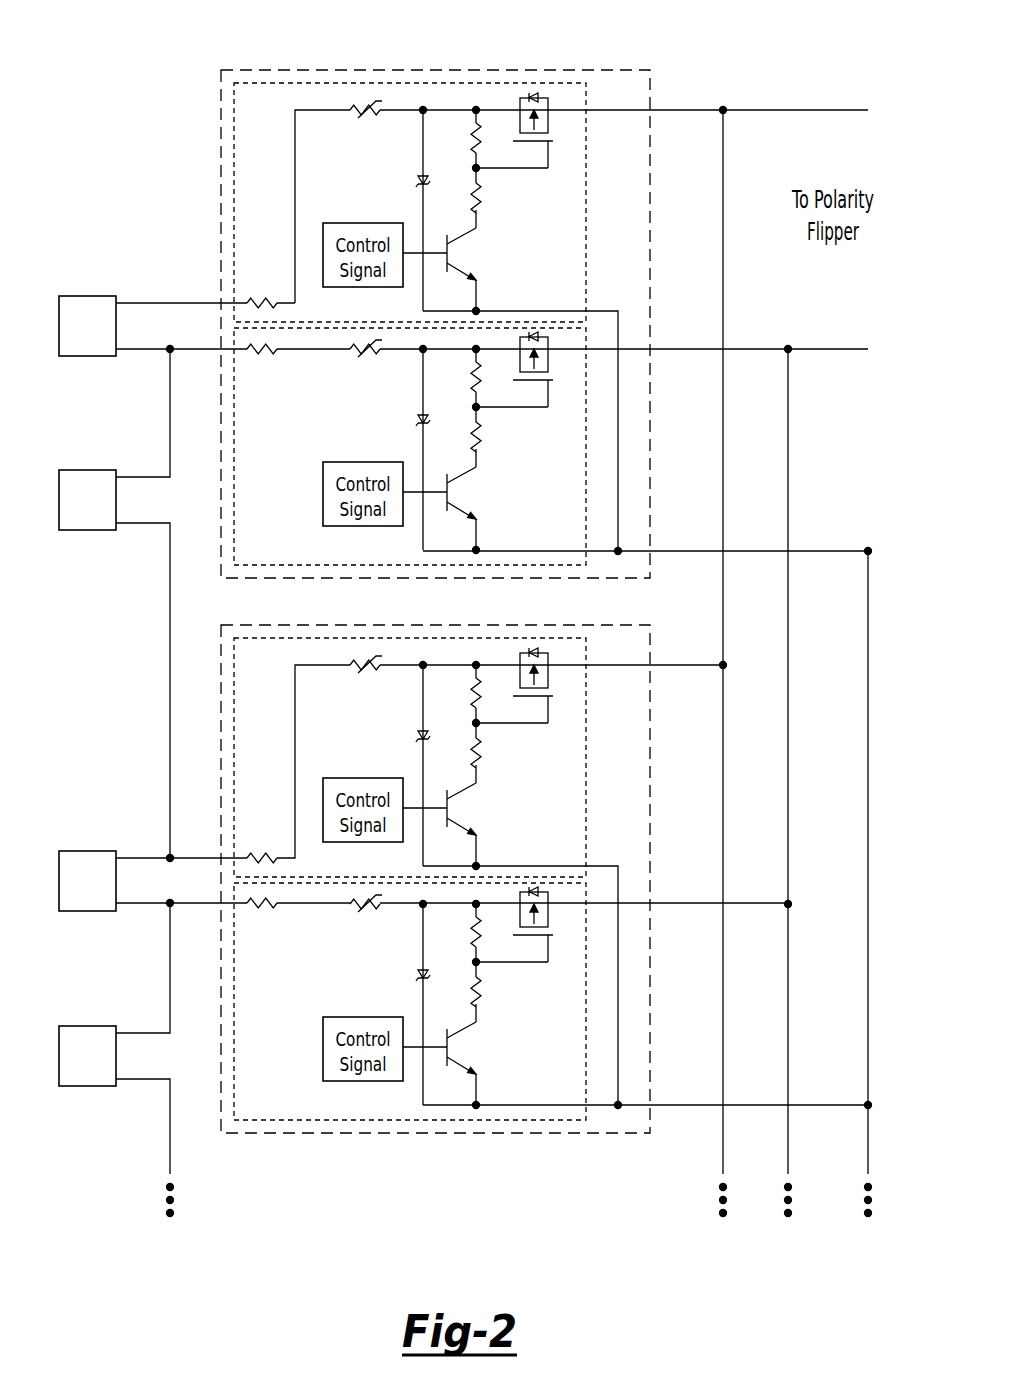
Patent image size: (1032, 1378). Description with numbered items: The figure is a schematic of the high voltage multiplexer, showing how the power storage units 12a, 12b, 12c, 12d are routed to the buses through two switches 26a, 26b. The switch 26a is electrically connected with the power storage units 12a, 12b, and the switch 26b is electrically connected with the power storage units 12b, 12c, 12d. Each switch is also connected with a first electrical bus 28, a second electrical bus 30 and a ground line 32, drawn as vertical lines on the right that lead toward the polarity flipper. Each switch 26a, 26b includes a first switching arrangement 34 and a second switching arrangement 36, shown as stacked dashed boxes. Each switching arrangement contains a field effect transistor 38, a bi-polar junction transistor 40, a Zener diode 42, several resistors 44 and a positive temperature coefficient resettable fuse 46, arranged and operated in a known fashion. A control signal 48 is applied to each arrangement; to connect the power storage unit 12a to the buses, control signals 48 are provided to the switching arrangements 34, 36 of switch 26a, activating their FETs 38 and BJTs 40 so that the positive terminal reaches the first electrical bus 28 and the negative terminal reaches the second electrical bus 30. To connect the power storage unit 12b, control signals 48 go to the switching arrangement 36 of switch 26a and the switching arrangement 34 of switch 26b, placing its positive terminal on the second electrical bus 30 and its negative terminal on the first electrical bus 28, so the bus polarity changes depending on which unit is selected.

The power storage unit 12a is at (86, 356).
The power storage unit 12b is at (86, 530).
The power storage unit 12c is at (86, 911).
The power storage unit 12d is at (86, 1086).
The switch 26a is at (444, 66).
The switch 26b is at (442, 625).
The first electrical bus 28 is at (723, 396).
The second electrical bus 30 is at (788, 714).
The ground line 32 is at (868, 936).
The first switching arrangement 34 is at (584, 220).
The second switching arrangement 36 is at (584, 459).
The field effect transistor 38 is at (548, 120).
The bi-polar junction transistor 40 is at (461, 262).
The Zener diode 42 is at (418, 180).
The resistor 44 is at (471, 137).
The positive temperature coefficient resettable fuse 46 is at (364, 113).
The control signal 48 is at (366, 223).